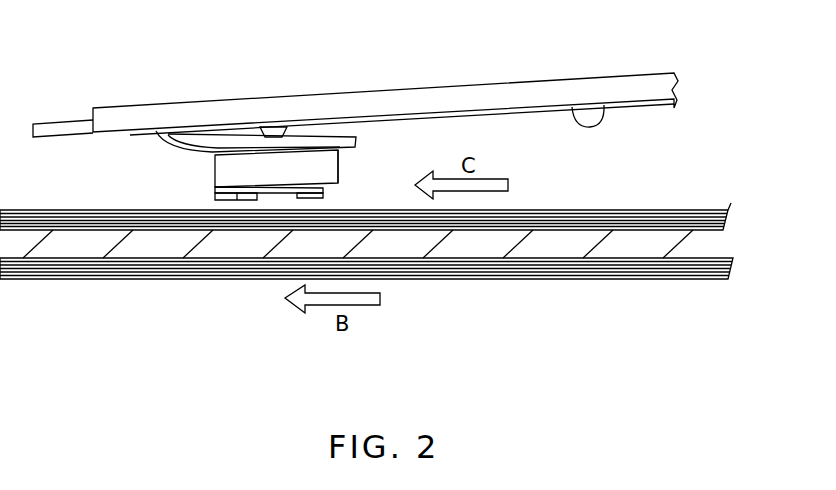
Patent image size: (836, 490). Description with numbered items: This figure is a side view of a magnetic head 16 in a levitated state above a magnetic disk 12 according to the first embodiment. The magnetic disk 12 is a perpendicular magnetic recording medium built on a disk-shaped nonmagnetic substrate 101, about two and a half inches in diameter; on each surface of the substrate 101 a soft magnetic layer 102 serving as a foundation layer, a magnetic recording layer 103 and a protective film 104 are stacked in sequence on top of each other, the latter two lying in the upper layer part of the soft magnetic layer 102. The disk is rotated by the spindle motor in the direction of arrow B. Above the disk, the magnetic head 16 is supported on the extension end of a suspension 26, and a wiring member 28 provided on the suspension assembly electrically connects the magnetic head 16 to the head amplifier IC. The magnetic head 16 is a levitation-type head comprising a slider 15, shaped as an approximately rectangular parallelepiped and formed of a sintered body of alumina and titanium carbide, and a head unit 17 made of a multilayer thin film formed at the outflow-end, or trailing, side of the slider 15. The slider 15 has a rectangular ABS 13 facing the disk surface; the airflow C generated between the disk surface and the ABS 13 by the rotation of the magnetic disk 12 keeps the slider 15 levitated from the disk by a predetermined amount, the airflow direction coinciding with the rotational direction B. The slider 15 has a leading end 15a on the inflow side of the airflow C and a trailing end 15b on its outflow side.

The magnetic disk 12 is at (404, 227).
The ABS (air-borne surface) 13 is at (268, 196).
The slider 15 is at (247, 165).
The leading end 15a is at (338, 158).
The trailing end 15b is at (213, 188).
The magnetic head 16 is at (348, 168).
The head unit 17 is at (215, 168).
The suspension 26 is at (540, 90).
The wiring member 28 is at (603, 120).
The substrate 101 is at (608, 243).
The soft magnetic layer 102 is at (727, 236).
The magnetic recording layer 103 is at (652, 210).
The protective film 104 is at (724, 207).